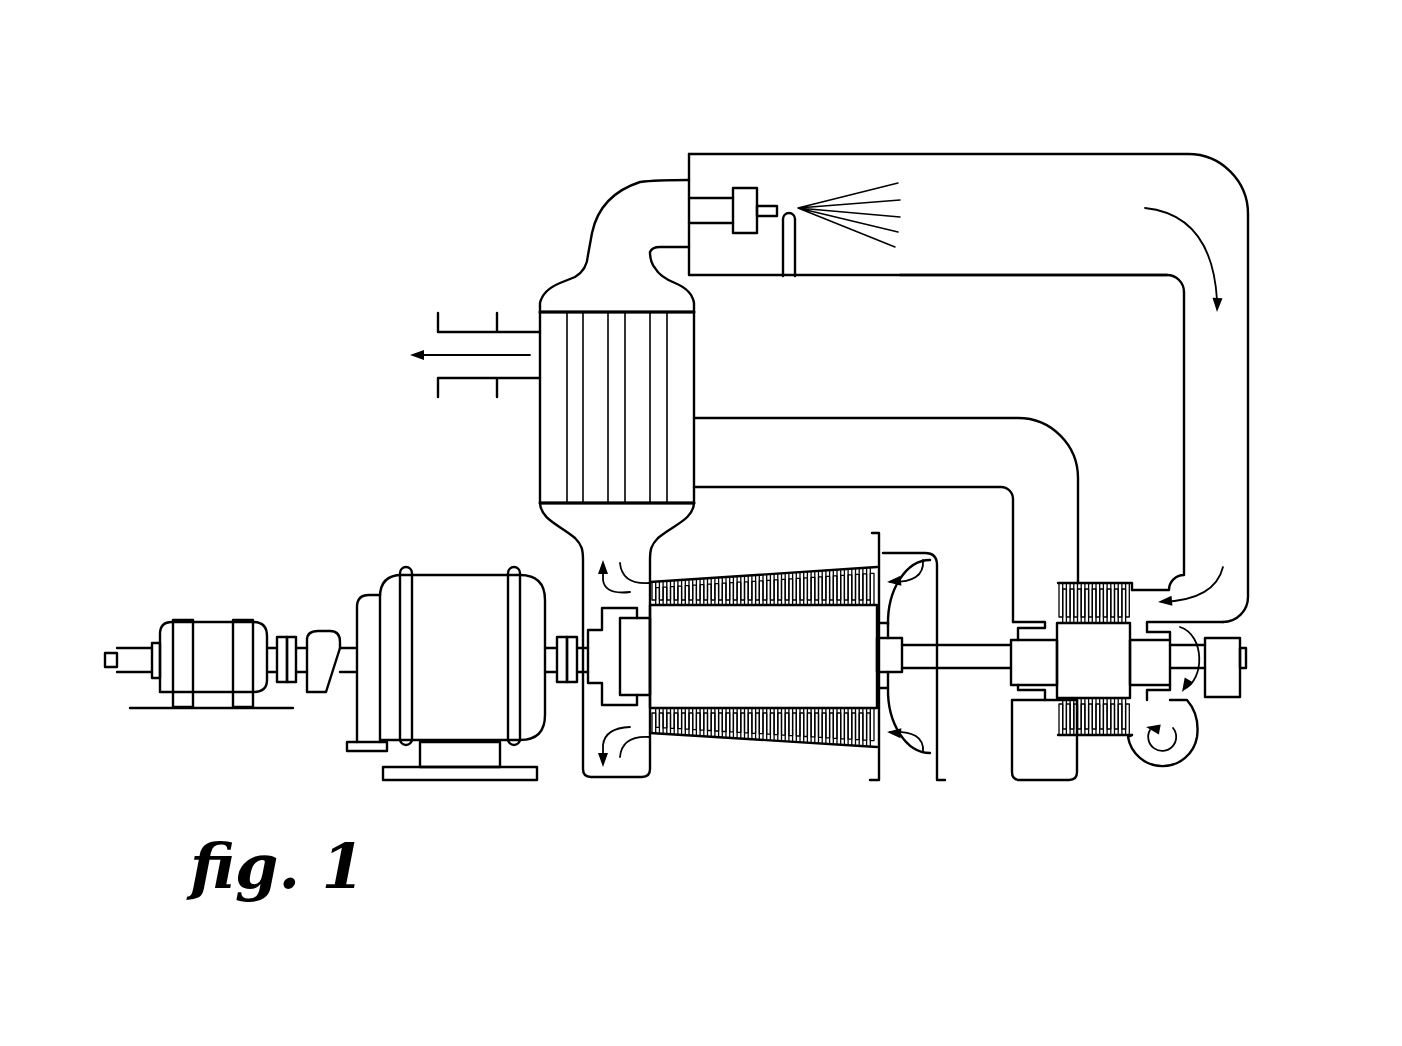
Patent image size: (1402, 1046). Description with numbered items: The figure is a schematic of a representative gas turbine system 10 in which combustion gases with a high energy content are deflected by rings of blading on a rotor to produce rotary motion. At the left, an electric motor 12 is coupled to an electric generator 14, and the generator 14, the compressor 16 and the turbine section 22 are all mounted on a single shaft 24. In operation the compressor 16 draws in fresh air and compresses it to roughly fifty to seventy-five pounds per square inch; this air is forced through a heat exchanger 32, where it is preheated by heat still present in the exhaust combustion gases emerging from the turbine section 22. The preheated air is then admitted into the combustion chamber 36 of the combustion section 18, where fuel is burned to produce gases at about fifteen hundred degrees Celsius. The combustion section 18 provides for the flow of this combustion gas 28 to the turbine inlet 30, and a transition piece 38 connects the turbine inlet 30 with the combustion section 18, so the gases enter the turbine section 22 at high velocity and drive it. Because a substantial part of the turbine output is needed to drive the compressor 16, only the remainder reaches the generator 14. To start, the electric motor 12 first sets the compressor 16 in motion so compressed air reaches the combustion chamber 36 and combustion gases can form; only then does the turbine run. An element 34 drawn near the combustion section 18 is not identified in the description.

The gas turbine system 10 is at (456, 216).
The electric motor 12 is at (212, 623).
The electric generator 14 is at (462, 573).
The compressor 16 is at (725, 752).
The combustion section 18 is at (818, 146).
The turbine section 22 is at (1103, 744).
The single shaft 24 is at (970, 644).
The combustion gas 28 is at (868, 193).
The turbine inlet 30 is at (1222, 698).
The heat exchanger 32 is at (702, 338).
The igniter 34 is at (795, 240).
The combustion chamber 36 is at (1003, 254).
The transition piece 38 is at (1248, 317).